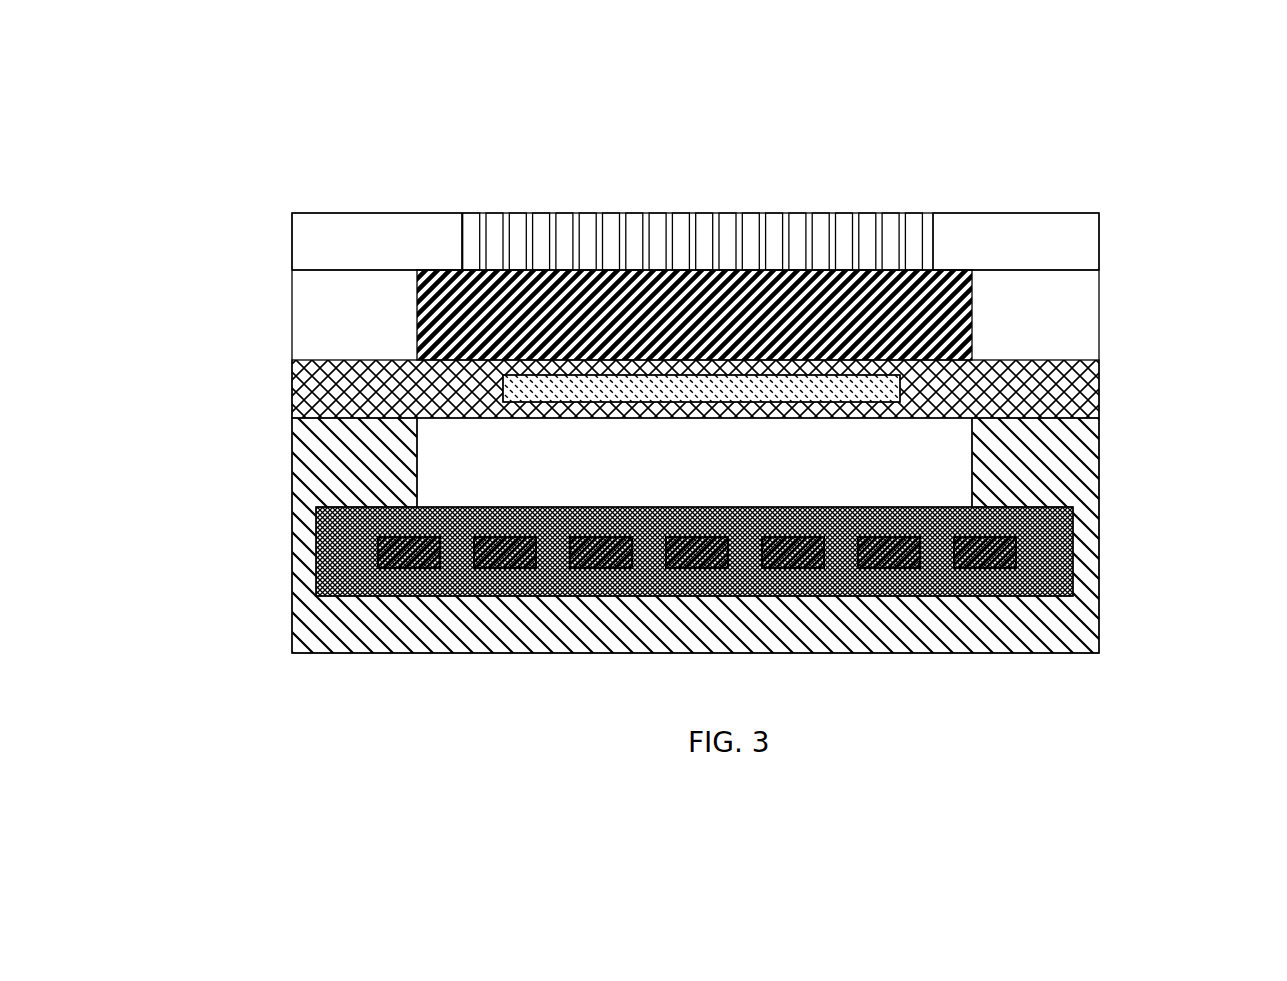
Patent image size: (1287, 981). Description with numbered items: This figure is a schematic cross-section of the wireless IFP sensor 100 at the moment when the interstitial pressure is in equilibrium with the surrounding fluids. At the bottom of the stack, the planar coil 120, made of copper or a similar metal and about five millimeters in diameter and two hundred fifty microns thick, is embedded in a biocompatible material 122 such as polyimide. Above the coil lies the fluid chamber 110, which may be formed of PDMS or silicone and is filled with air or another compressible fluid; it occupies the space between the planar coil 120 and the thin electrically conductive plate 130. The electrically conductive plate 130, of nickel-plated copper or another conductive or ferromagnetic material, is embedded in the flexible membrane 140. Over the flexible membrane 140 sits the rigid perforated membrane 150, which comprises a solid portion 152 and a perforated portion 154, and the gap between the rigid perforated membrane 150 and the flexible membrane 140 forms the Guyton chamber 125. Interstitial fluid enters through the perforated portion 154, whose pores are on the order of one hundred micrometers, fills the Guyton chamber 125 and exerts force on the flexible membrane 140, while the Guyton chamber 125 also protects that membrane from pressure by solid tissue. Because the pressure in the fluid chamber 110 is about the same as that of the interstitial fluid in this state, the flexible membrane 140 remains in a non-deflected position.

The wireless IFP sensor 100 is at (277, 157).
The fluid chamber 110 is at (863, 463).
The planar coil 120 is at (875, 555).
The biocompatible material 122 is at (1078, 540).
The Guyton chamber 125 is at (972, 297).
The electrically conductive plate 130 is at (873, 397).
The flexible membrane 140 is at (320, 403).
The rigid perforated membrane 150 is at (952, 210).
The solid portion 152 is at (1025, 213).
The perforated portion 154 is at (623, 218).